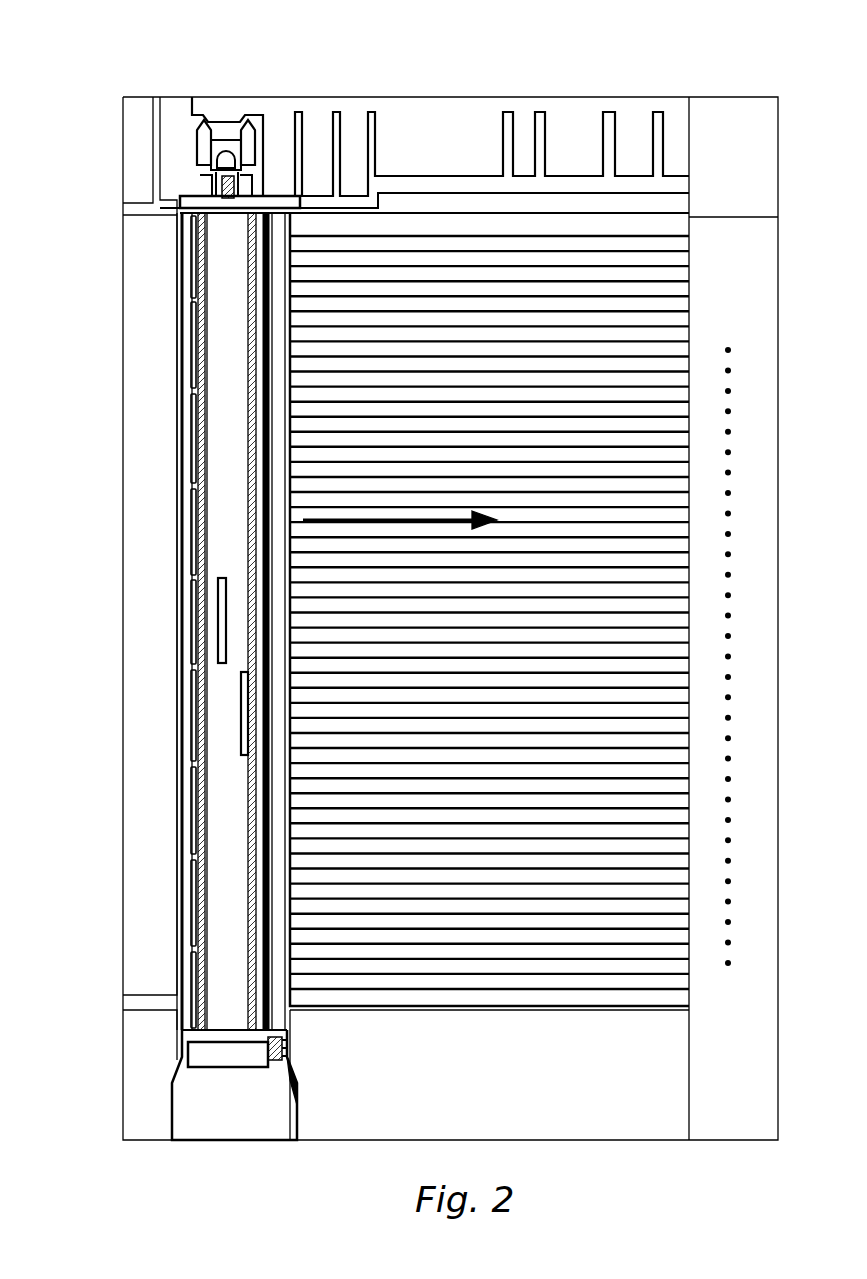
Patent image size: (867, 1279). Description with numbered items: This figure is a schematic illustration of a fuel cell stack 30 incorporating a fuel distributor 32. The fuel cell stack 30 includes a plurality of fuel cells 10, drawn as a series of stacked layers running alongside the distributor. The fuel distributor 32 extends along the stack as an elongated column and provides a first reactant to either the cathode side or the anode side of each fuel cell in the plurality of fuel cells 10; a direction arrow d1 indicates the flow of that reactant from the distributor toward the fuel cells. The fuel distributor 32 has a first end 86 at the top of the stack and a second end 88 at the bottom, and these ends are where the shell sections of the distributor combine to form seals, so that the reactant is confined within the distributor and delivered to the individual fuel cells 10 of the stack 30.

The fuel cell stack 30 is at (175, 80).
The fuel distributor 32 is at (217, 450).
The first end 86 is at (200, 170).
The second end 88 is at (170, 1110).
The fuel cells 10 is at (743, 1008).
The direction d1 is at (312, 520).